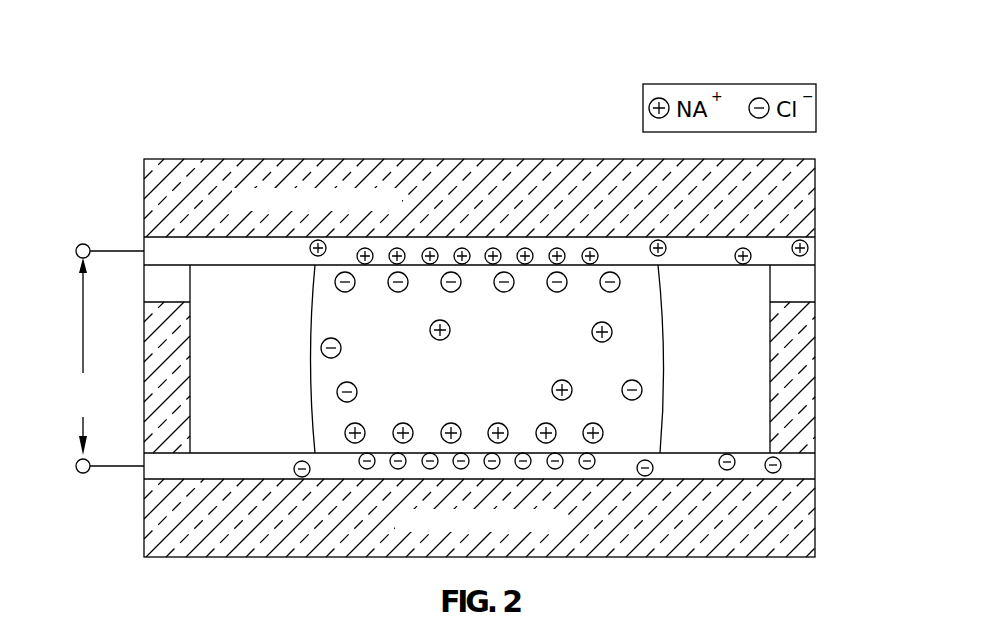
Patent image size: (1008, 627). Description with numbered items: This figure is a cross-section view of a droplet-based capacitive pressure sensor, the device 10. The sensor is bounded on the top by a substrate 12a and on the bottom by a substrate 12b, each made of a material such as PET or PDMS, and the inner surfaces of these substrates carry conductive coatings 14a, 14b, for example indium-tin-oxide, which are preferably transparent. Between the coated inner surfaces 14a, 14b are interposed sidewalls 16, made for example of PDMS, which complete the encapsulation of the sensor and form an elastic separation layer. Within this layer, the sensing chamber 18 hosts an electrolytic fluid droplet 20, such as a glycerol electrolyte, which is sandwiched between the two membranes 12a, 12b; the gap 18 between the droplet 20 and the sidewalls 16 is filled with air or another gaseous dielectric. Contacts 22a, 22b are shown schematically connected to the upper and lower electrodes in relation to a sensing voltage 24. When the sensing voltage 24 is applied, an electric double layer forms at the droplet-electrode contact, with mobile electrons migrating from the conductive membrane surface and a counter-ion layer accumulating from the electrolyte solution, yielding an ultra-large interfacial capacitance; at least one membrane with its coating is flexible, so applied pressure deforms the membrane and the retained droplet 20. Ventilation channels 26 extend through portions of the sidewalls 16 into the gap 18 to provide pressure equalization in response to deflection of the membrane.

The device 10 is at (150, 118).
The top substrate 12a is at (817, 215).
The bottom substrate 12b is at (817, 523).
The inner surface conductive coating 14a is at (817, 252).
The inner surface conductive coating 14b is at (817, 467).
The sidewalls 16 is at (178, 435).
The gap / sensing chamber 18 is at (743, 393).
The electrolytic fluid droplet 20 is at (470, 322).
The contact 22a is at (128, 247).
The contact 22b is at (130, 470).
The sensing voltage 24 is at (77, 390).
The ventilation channels 26 is at (185, 283).